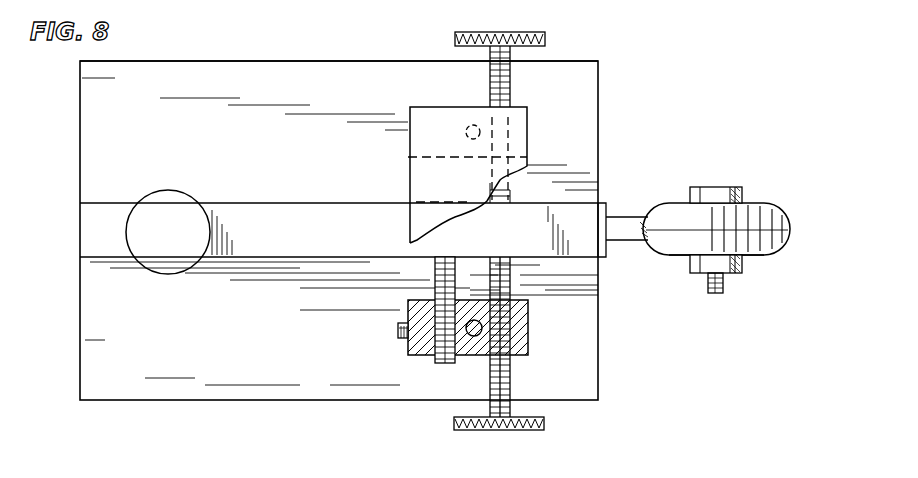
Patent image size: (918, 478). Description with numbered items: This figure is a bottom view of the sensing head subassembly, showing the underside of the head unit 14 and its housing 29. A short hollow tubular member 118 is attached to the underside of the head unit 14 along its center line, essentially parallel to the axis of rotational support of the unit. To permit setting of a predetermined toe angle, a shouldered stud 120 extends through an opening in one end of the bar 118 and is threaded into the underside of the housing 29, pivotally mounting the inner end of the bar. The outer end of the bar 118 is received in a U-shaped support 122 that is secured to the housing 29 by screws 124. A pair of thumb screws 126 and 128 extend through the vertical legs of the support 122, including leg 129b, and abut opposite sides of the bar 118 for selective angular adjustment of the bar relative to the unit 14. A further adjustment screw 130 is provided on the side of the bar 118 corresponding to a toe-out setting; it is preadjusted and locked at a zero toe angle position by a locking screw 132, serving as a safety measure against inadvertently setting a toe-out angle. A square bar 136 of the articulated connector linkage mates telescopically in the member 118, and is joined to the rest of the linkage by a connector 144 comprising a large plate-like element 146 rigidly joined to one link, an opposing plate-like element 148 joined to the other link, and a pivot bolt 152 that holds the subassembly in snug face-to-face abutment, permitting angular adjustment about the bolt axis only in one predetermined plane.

The head unit 14 is at (78, 306).
The housing 29 is at (248, 62).
The hollow tubular member 118 is at (243, 205).
The shouldered stud 120 is at (168, 190).
The U-shaped support 122 is at (430, 113).
The screws 124 is at (474, 340).
The thumb screw 126 is at (503, 31).
The thumb screw 128 is at (510, 430).
The vertical leg 129b is at (513, 332).
The adjustment screw 130 is at (447, 356).
The locking screw 132 is at (398, 333).
The square bar 136 is at (645, 183).
The connector 144 is at (766, 202).
The plate-like element 146 is at (670, 247).
The plate-like element 148 is at (665, 208).
The pivot bolt 152 is at (714, 189).